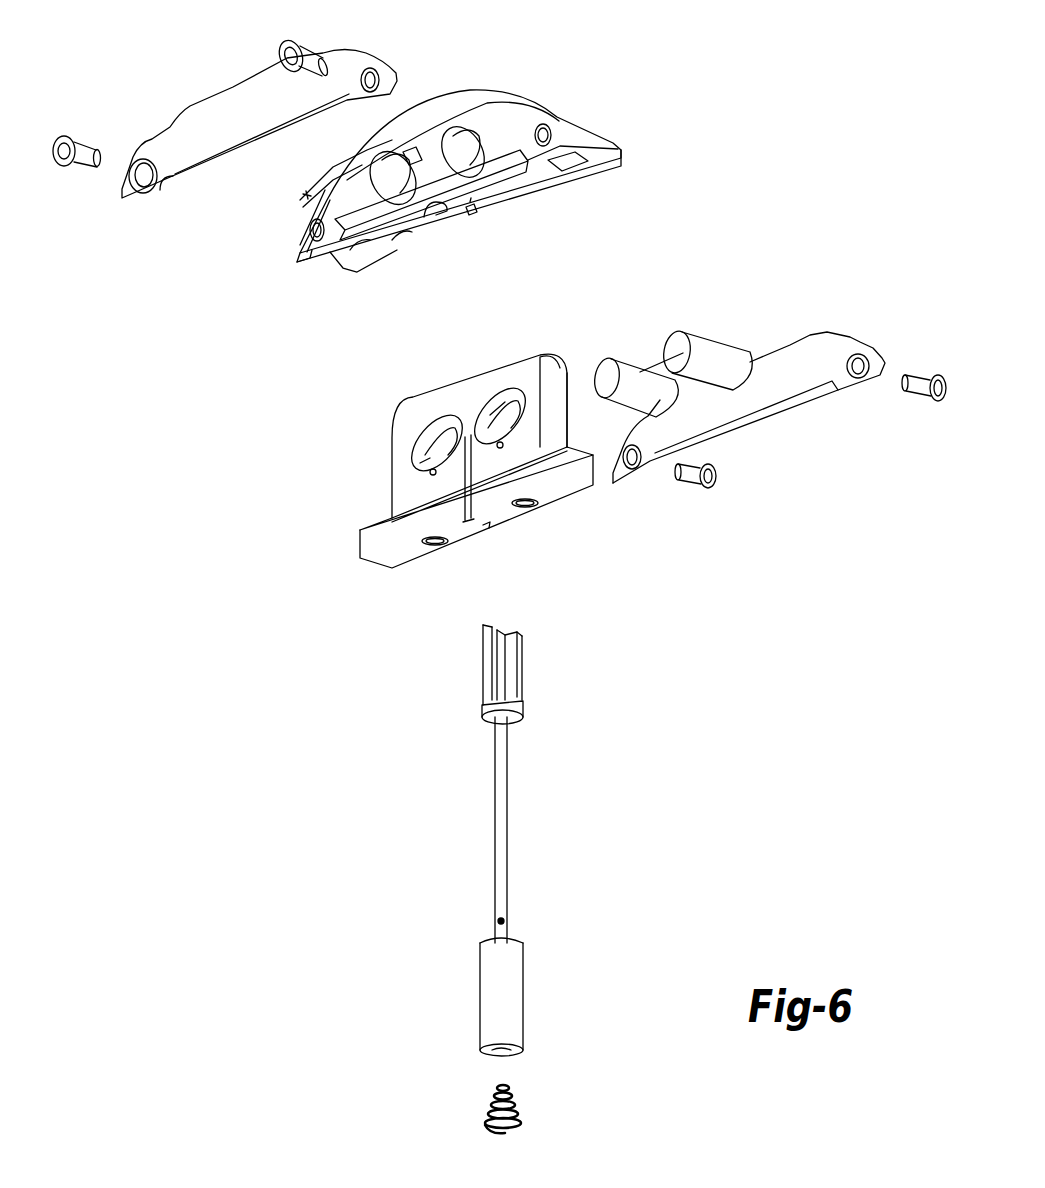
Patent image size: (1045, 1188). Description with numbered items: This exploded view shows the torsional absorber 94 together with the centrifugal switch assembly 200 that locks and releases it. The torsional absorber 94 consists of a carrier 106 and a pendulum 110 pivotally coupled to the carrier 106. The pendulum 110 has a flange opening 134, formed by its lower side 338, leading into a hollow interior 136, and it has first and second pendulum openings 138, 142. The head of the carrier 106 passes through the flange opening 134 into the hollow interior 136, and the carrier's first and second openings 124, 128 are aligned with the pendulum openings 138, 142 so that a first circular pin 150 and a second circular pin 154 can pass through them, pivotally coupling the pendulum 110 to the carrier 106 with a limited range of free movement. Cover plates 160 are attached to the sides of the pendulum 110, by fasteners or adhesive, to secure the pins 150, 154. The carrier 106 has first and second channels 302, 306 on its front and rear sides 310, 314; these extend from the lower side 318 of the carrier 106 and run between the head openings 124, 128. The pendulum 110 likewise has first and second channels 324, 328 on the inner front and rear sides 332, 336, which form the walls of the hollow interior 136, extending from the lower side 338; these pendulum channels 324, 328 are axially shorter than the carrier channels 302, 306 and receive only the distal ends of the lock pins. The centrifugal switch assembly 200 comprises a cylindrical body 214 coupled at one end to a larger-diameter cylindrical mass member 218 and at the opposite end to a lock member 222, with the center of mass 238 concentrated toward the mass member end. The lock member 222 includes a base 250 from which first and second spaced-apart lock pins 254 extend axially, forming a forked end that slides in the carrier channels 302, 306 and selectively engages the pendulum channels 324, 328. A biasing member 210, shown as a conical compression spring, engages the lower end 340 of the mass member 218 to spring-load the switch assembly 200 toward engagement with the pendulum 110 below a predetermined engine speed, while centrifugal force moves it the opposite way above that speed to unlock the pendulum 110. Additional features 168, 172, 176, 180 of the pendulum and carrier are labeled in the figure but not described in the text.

The torsional absorber 94 is at (538, 76).
The pendulum 110 is at (609, 119).
The cover plates 160 is at (247, 93).
The first pendulum opening 138 is at (468, 128).
The bore 168 is at (420, 158).
The rib 172 is at (368, 175).
The second pendulum opening 142 is at (320, 190).
The lower side 338 is at (297, 260).
The flange opening 134 is at (340, 267).
The hollow interior 136 is at (375, 243).
The inner rear side 336 is at (400, 233).
The first channel 324 is at (440, 205).
The second channel 328 is at (470, 215).
The inner front side 332 is at (540, 195).
The groove 176 is at (493, 417).
The rear side 314 is at (573, 397).
The first opening 124 is at (490, 397).
The front side 310 is at (463, 459).
The second opening 128 is at (410, 450).
The recess 180 is at (420, 463).
The first channel 302 is at (462, 525).
The second channel 306 is at (487, 527).
The lower side 318 is at (548, 495).
The carrier 106 is at (593, 507).
The first circular pin 150 is at (720, 370).
The second circular pin 154 is at (657, 403).
The lock pins 254 is at (520, 653).
The lock member 222 is at (490, 686).
The base 250 is at (510, 707).
The centrifugal switch assembly 200 is at (597, 753).
The body 214 is at (486, 783).
The center of mass 238 is at (505, 921).
The mass member 218 is at (475, 977).
The lower end 340 is at (512, 1050).
The biasing member 210 is at (483, 1106).